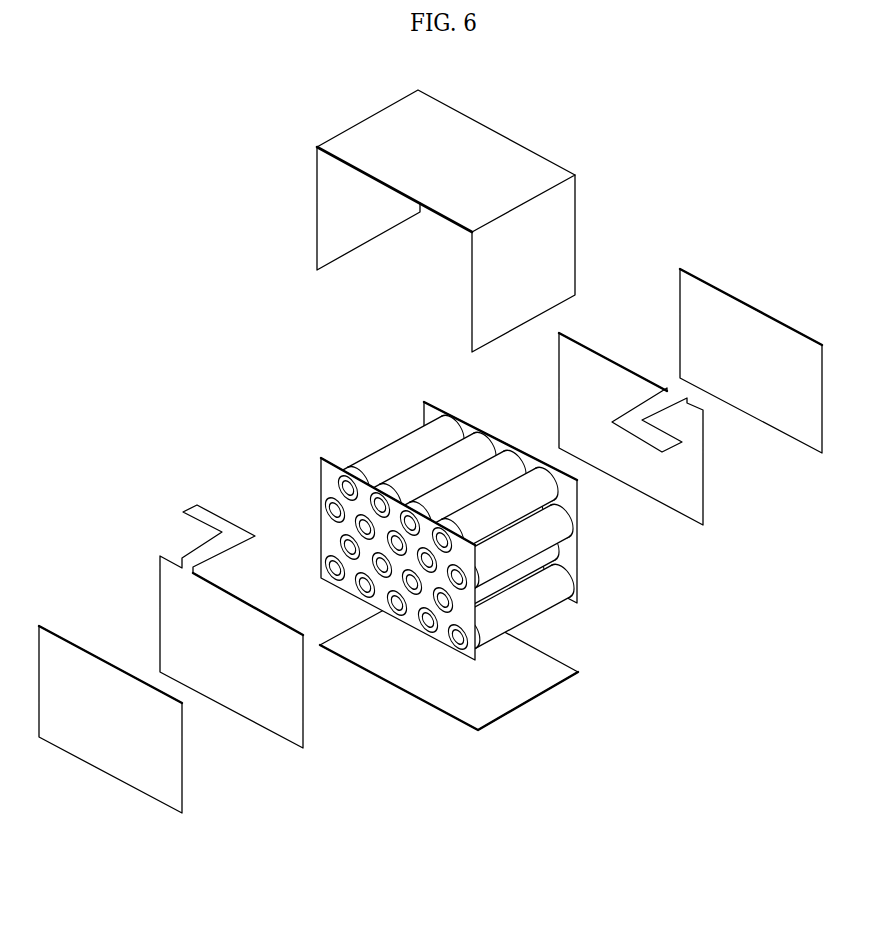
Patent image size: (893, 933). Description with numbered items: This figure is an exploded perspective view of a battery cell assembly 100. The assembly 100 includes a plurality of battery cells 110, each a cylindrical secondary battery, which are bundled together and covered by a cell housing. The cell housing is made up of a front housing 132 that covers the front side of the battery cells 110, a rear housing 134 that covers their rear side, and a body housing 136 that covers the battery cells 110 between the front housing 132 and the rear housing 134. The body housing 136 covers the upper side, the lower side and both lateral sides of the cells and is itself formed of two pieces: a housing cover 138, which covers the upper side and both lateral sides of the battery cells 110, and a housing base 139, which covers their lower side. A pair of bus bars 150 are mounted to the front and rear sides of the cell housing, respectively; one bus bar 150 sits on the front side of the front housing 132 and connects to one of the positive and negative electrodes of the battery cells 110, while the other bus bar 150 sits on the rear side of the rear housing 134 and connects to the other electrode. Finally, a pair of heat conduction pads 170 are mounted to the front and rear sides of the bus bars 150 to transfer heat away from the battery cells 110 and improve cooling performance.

The battery cell assembly 100 is at (162, 160).
The battery cell 110 is at (362, 405).
The front housing 132 is at (325, 455).
The rear housing 134 is at (426, 400).
The body housing 136 is at (608, 692).
The housing cover 138 is at (475, 130).
The housing base 139 is at (492, 705).
The bus bar 150 is at (308, 755).
The heat conduction pad 170 is at (185, 820).